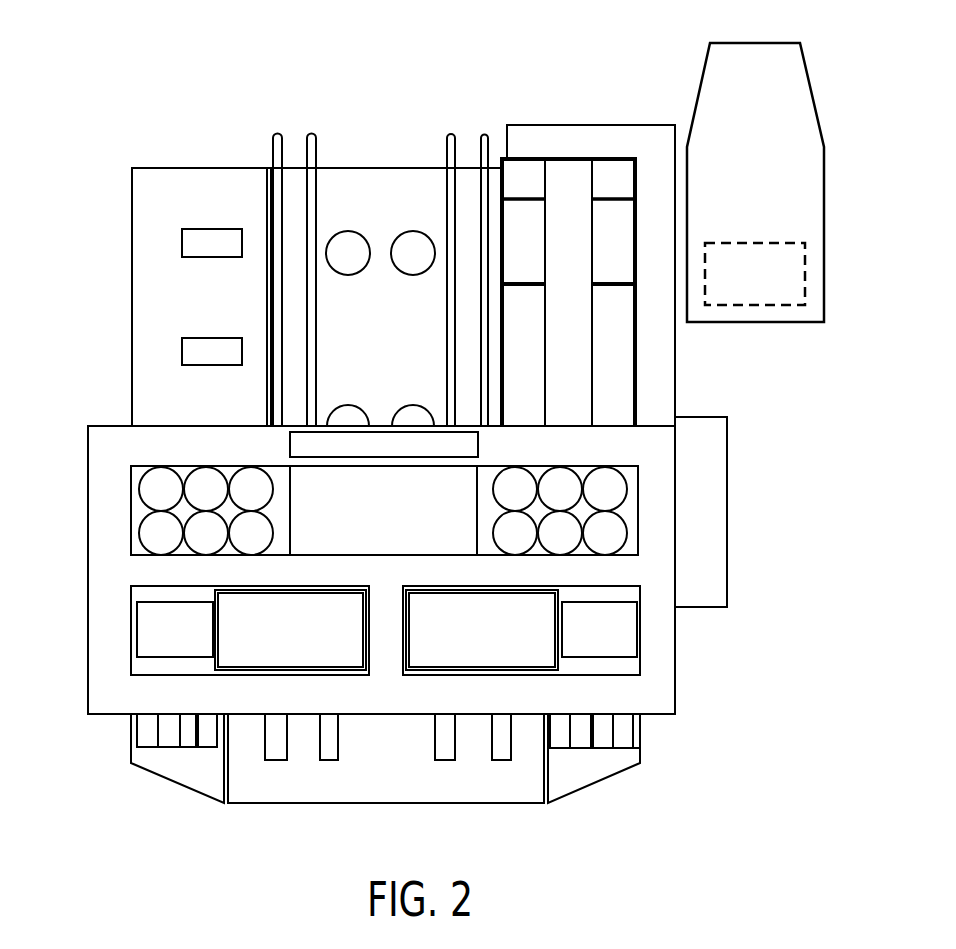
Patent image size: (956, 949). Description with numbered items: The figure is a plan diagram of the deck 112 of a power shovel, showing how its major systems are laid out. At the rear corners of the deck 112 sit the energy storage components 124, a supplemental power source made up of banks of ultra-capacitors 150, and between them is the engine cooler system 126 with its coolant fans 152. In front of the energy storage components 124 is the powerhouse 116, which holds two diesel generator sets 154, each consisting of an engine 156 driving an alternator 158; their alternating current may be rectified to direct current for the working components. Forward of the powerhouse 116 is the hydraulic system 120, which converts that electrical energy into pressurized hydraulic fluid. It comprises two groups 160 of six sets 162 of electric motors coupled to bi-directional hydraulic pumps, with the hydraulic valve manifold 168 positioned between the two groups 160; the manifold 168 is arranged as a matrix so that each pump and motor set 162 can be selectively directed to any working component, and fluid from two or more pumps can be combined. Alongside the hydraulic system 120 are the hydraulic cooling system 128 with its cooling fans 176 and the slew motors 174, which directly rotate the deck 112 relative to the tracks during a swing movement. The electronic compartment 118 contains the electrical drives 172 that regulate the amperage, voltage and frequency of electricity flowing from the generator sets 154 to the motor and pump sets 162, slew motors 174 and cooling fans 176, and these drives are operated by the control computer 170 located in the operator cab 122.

The deck 112 is at (162, 70).
The powerhouse 116 is at (108, 634).
The electronic compartment 118 is at (567, 190).
The hydraulic system 120 is at (108, 494).
The operator cab 122 is at (733, 187).
The energy storage components 124 is at (207, 780).
The engine cooler system 126 is at (338, 787).
The hydraulic cooling system 128 is at (162, 180).
The ultra-capacitors 150 is at (207, 742).
The coolant fans 152 is at (497, 748).
The diesel generator sets 154 is at (150, 590).
The engine 156 is at (274, 644).
The alternator 158 is at (157, 644).
The groups 160 is at (140, 468).
The sets 162 is at (150, 542).
The hydraulic valve manifold 168 is at (369, 524).
The control computer 170 is at (738, 292).
The electrical drives 172 is at (615, 377).
The slew motors 174 is at (410, 247).
The cooling fans 176 is at (207, 343).